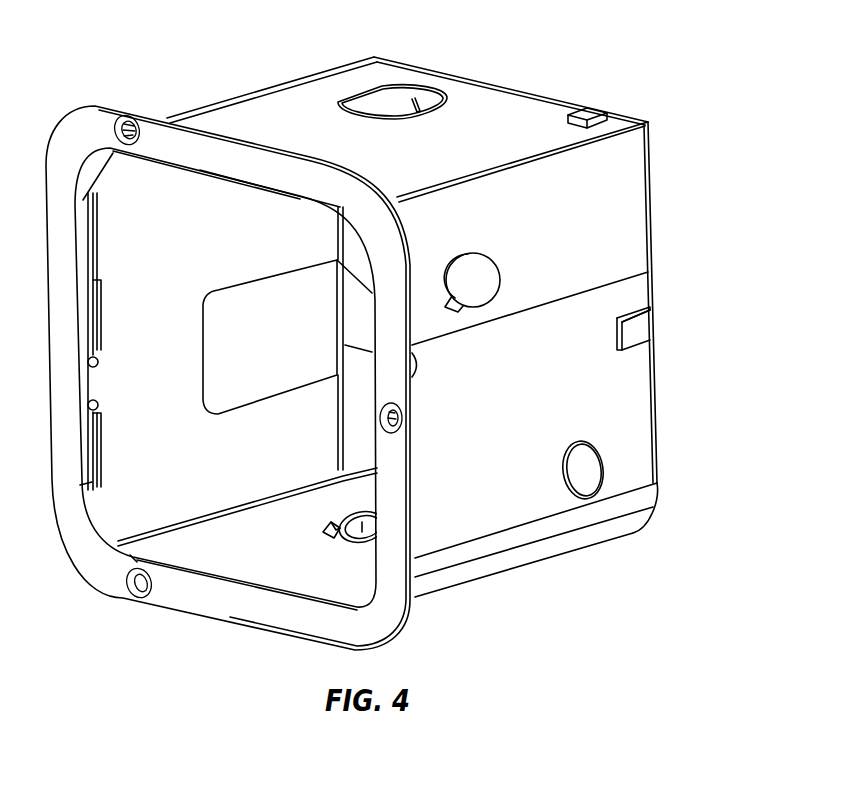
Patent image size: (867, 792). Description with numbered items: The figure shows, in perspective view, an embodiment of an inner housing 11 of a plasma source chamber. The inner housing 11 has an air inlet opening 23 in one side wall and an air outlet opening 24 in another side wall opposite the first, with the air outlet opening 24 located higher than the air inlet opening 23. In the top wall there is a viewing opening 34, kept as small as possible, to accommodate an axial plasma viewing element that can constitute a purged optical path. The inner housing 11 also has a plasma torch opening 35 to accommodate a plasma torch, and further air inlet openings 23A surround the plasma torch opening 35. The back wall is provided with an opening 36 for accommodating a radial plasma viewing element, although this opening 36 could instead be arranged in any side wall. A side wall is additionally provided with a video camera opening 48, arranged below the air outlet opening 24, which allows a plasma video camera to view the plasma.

The inner housing 11 is at (500, 130).
The air inlet opening 23 is at (283, 356).
The further air inlet openings 23A is at (323, 530).
The air outlet opening 24 is at (627, 239).
The viewing opening 34 is at (392, 97).
The plasma torch opening 35 is at (366, 508).
The opening for accommodating a radial plasma viewing element 36 is at (490, 297).
The video camera opening 48 is at (586, 470).